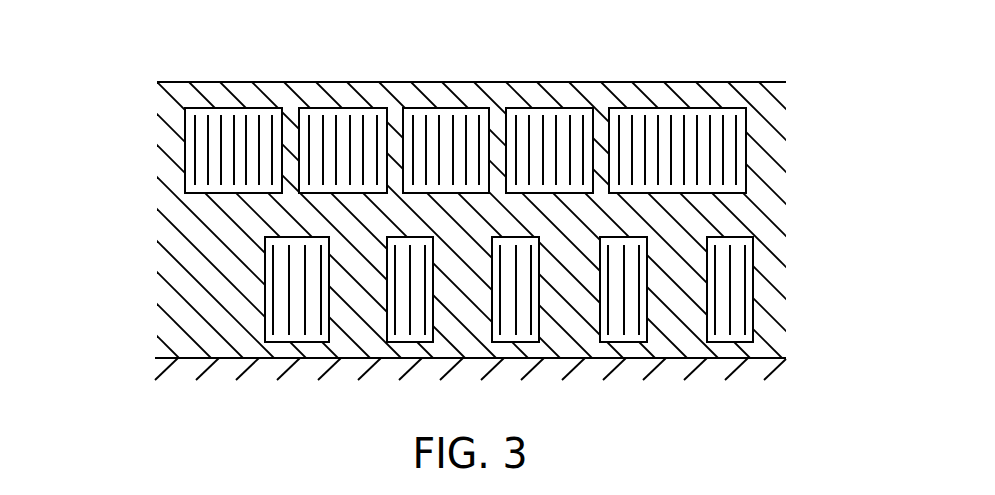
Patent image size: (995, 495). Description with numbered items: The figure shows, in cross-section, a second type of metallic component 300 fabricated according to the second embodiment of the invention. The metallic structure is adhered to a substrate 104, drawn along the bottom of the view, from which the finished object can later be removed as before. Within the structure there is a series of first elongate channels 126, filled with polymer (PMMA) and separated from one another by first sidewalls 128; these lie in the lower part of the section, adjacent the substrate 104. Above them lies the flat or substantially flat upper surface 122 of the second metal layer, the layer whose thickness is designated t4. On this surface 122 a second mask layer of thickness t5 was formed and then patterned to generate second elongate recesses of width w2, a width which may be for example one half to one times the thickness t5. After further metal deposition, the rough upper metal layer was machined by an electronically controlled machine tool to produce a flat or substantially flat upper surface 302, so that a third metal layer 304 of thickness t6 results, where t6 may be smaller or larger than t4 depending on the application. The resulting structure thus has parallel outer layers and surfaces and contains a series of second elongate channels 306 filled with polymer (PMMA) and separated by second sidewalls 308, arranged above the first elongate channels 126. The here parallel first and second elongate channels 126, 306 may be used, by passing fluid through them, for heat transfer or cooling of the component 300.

The metallic component 300 is at (807, 250).
The upper surface 302 is at (653, 82).
The third metal layer 304 is at (560, 90).
The second elongate channels 306 is at (222, 105).
The second sidewalls 308 is at (396, 127).
The upper surface of second metal layer 122 is at (742, 193).
The first elongate channels 126 is at (282, 327).
The first sidewalls 128 is at (472, 318).
The substrate 104 is at (588, 373).
The thickness of second metal layer t4 is at (112, 198).
The thickness of second mask layer t5 is at (115, 105).
The thickness of third metal layer t6 is at (141, 35).
The width of second elongate recesses w2 is at (348, 68).